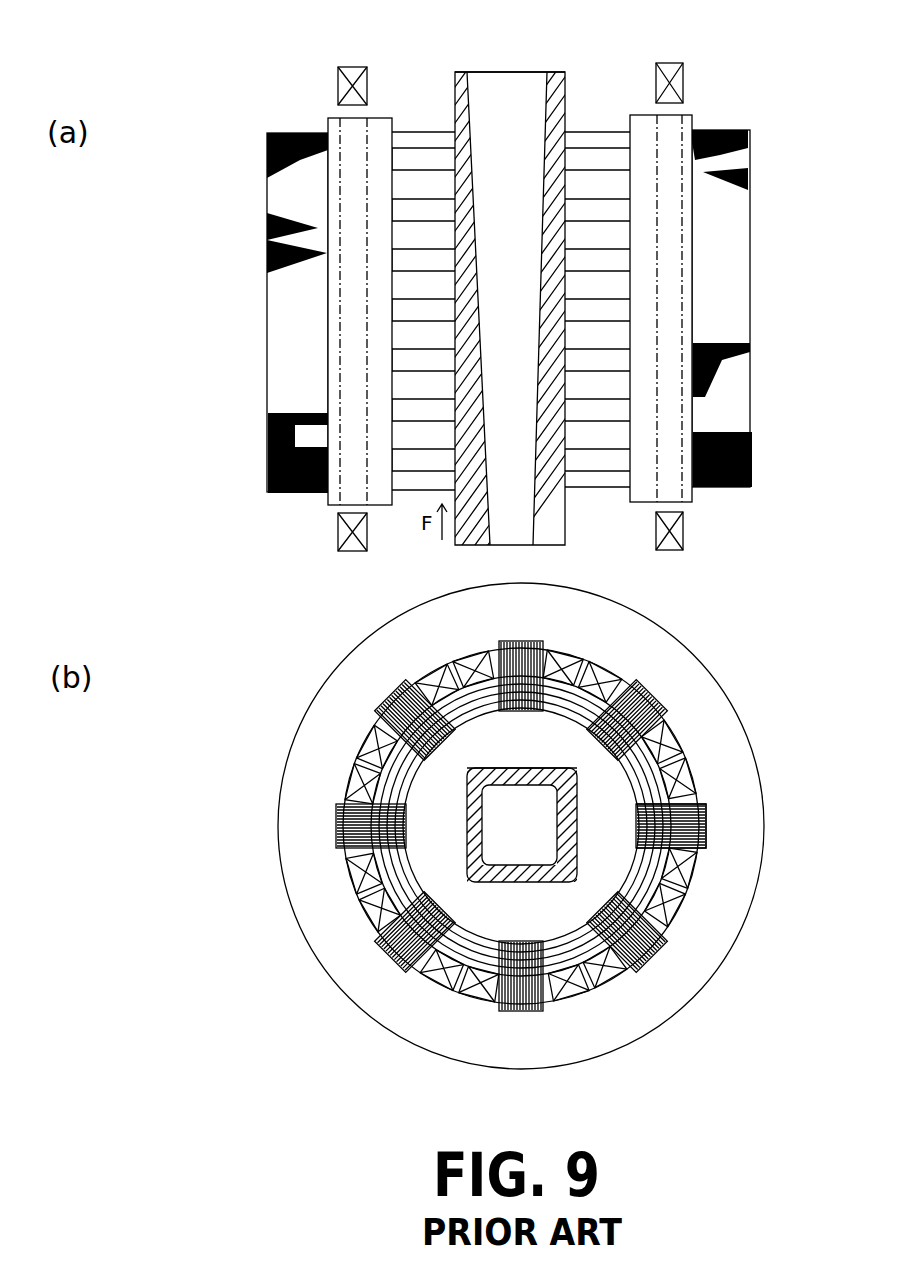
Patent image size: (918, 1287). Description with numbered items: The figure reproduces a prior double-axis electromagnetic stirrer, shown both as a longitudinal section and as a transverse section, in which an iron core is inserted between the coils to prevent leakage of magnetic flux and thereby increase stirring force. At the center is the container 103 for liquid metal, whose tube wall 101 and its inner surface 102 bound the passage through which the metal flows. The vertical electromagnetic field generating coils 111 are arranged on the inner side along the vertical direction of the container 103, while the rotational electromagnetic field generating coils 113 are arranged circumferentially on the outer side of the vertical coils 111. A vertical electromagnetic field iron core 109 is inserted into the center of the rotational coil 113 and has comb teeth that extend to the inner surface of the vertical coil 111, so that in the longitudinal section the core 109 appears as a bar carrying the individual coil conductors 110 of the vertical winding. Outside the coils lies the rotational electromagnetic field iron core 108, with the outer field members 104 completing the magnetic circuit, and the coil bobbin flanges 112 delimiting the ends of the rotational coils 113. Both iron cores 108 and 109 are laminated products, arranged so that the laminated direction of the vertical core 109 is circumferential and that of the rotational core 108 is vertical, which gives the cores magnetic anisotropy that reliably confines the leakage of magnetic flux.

The guide tube 101 is at (568, 100).
The tube wall 102 is at (455, 88).
The container 103 is at (512, 468).
The permanent magnet 104 is at (264, 165).
The rotational electromagnetic field iron core 108 is at (738, 206).
The vertical electromagnetic field iron core 109 is at (345, 500).
The coil conductor 110 is at (650, 347).
The vertical electromagnetic field generating coil 111 is at (406, 772).
The coil flange 112 is at (704, 832).
The rotational electromagnetic field generating coil 113 is at (366, 86).